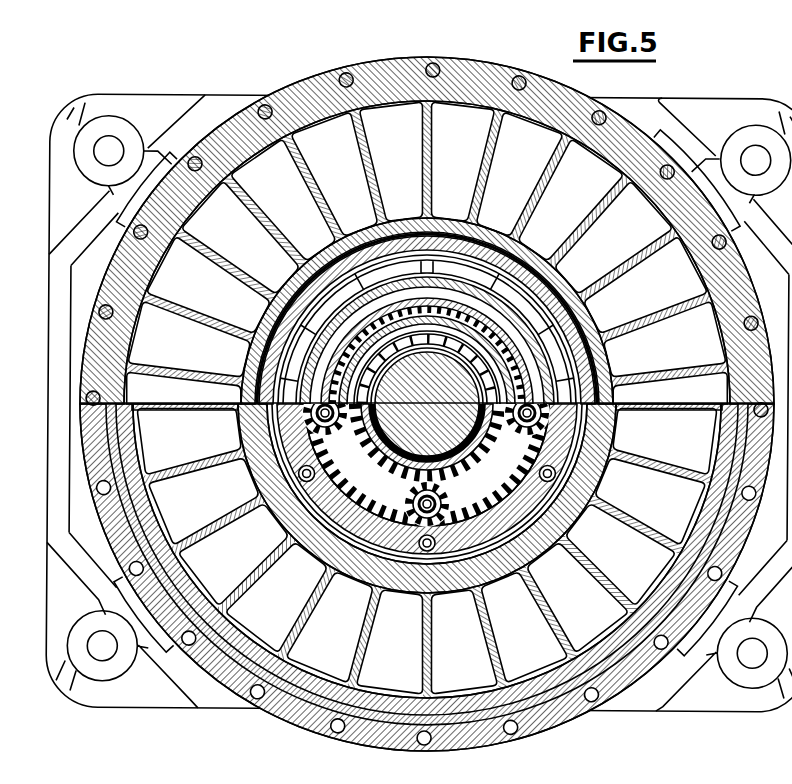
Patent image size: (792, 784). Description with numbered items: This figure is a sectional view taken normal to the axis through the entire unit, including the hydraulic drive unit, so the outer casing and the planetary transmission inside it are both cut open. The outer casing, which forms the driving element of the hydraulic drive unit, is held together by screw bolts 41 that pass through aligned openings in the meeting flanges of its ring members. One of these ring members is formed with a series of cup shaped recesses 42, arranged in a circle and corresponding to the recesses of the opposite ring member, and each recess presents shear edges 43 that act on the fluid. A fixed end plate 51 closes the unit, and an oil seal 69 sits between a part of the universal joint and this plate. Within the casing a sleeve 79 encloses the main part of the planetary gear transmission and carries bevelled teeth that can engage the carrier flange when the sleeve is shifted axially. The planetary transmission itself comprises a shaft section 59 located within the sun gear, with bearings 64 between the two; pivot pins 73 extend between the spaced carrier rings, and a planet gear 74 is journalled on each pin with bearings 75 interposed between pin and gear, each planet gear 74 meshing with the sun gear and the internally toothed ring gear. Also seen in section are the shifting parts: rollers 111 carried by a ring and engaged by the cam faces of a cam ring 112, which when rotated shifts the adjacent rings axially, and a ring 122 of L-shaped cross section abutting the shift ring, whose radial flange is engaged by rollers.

The screw bolts 41 is at (528, 78).
The cup shaped recesses 42 is at (574, 220).
The shear edges 43 is at (482, 189).
The fixed end plate 51 is at (512, 371).
The shaft section 59 is at (487, 443).
The bearings 64 is at (368, 443).
The oil seal 69 is at (540, 472).
The pivot pins 73 is at (408, 496).
The planet gear 74 is at (448, 503).
The bearings 75 is at (410, 480).
The sleeve 79 is at (300, 292).
The rollers 111 is at (556, 333).
The cam ring 112 is at (530, 306).
The ring 122 is at (530, 360).